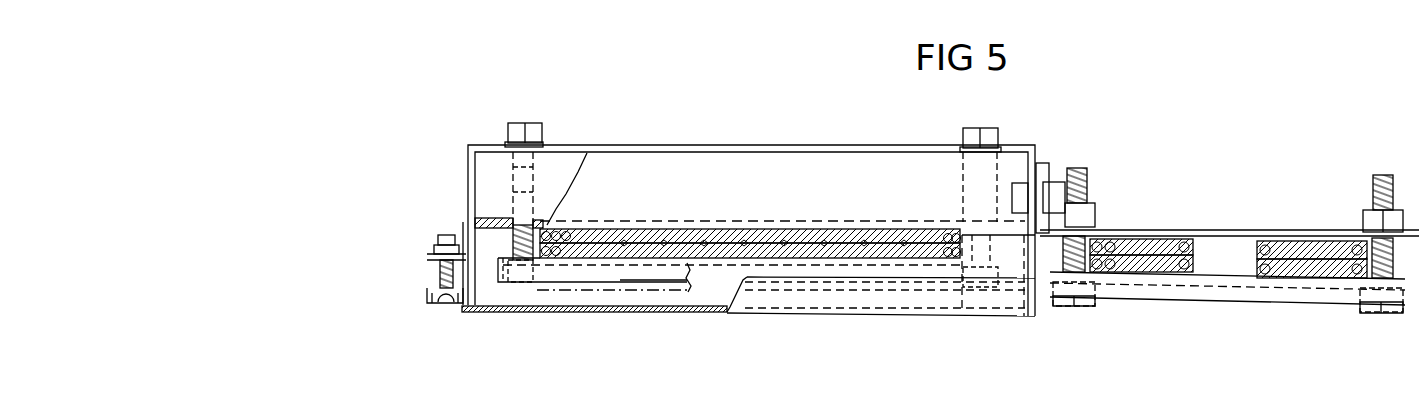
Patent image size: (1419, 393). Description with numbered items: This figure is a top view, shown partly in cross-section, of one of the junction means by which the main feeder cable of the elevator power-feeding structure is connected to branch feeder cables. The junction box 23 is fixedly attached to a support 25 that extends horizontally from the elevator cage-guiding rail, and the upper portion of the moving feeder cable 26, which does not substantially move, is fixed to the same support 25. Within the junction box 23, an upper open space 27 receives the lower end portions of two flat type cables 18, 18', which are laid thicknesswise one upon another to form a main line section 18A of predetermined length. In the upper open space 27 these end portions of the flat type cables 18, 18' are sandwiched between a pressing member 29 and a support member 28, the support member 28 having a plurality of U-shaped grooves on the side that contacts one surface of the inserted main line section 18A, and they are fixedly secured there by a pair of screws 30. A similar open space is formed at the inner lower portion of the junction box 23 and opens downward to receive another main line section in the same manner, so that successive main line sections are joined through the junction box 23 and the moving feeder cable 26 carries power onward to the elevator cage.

The flat type cable 18 is at (750, 296).
The flat type cable 18' is at (750, 303).
The main line section 18A is at (750, 311).
The junction box 23 is at (815, 150).
The support 25 is at (1240, 230).
The moving feeder cable 26 is at (1150, 276).
The upper open space 27 is at (535, 290).
The support member 28 is at (485, 222).
The pressing member 29 is at (573, 274).
The screws 30 is at (507, 283).